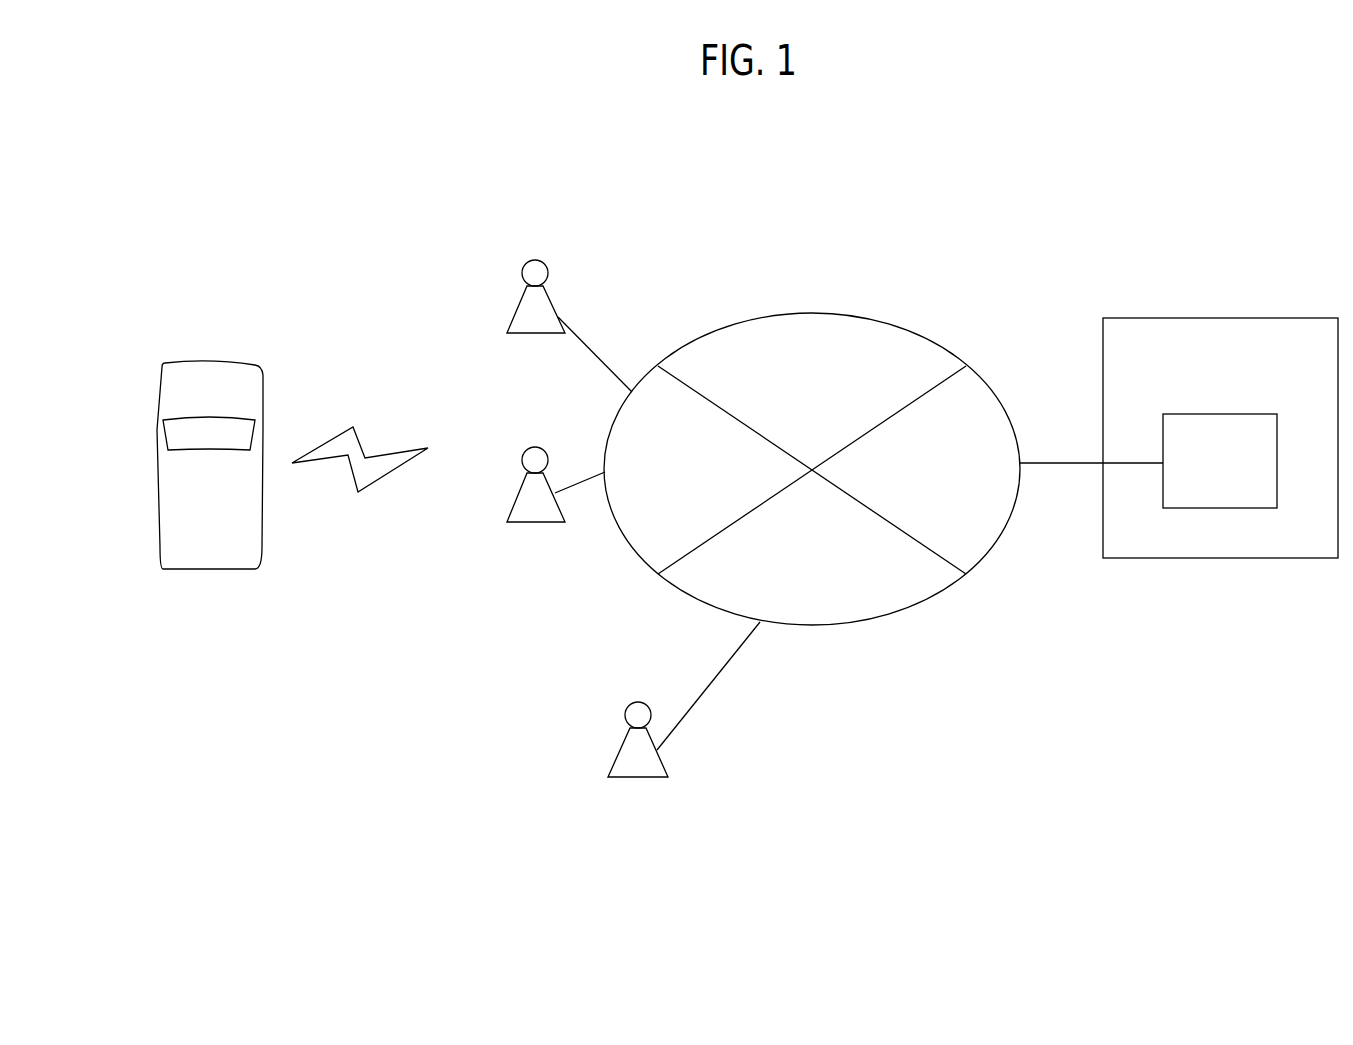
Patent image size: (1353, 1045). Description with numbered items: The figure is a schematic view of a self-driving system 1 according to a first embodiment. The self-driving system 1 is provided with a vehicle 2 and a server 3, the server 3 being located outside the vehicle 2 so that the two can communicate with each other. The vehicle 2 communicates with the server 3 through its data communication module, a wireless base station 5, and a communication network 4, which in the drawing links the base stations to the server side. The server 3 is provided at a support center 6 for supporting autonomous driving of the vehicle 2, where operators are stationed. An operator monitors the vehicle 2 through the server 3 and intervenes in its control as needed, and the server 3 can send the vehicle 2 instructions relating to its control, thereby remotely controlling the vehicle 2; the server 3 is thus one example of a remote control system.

The self-driving system 1 is at (1223, 855).
The vehicle 2 is at (160, 392).
The server 3 is at (1207, 510).
The communication network 4 is at (888, 617).
The wireless base station 5 is at (548, 265).
The support center 6 is at (1197, 317).